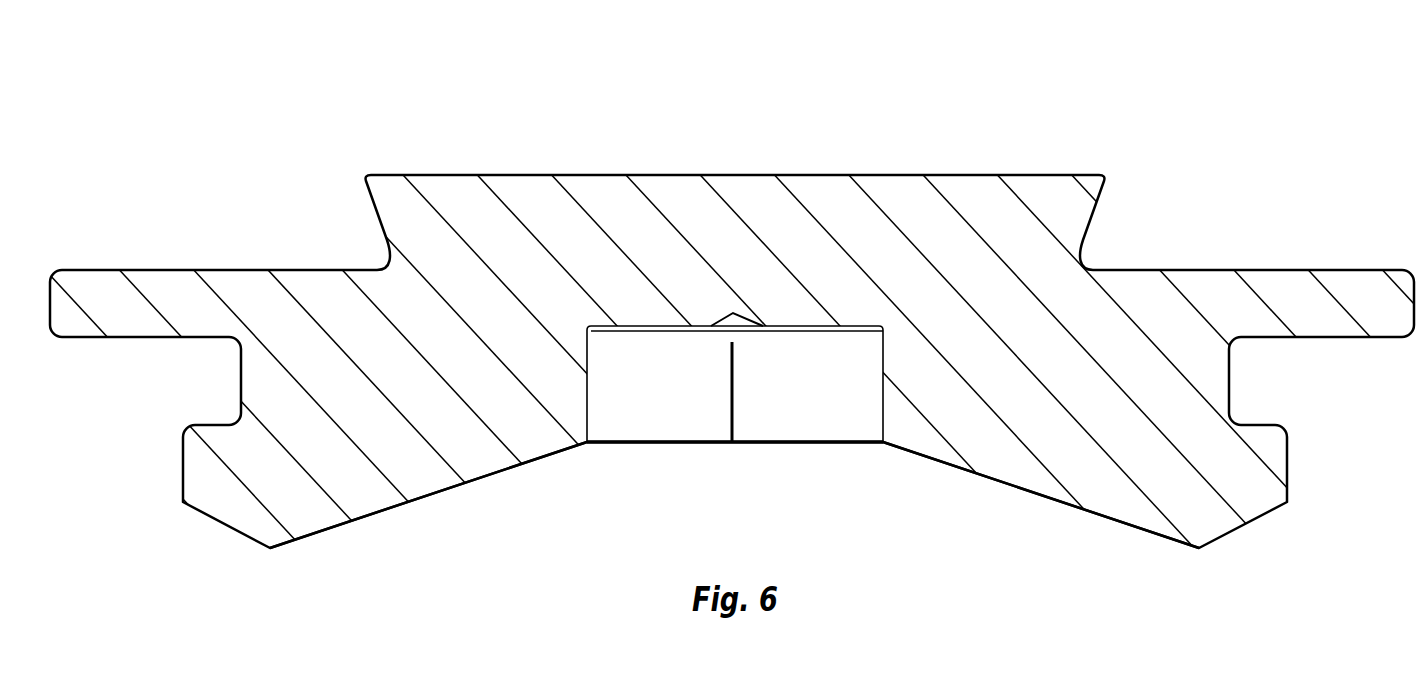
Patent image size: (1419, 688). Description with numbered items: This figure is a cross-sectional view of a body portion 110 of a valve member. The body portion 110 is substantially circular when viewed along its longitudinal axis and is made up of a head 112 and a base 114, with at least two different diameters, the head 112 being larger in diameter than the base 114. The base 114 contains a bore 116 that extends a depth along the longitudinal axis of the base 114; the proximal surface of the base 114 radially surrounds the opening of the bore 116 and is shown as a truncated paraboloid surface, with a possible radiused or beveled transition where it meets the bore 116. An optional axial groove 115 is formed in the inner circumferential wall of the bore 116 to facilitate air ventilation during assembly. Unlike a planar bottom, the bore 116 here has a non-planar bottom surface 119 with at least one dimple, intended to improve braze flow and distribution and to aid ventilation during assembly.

The body portion 110 is at (1291, 76).
The head 112 is at (189, 300).
The base 114 is at (478, 482).
The axial groove 115 is at (726, 404).
The bore 116 is at (818, 408).
The non-planar bottom surface 119 is at (652, 334).